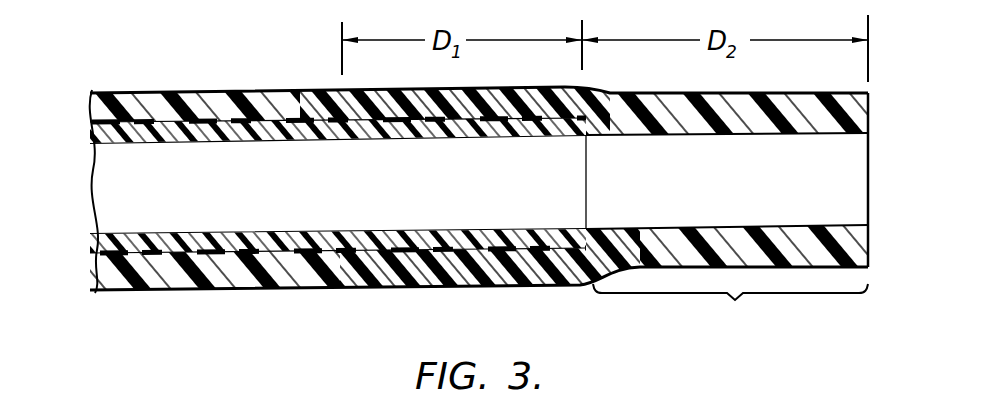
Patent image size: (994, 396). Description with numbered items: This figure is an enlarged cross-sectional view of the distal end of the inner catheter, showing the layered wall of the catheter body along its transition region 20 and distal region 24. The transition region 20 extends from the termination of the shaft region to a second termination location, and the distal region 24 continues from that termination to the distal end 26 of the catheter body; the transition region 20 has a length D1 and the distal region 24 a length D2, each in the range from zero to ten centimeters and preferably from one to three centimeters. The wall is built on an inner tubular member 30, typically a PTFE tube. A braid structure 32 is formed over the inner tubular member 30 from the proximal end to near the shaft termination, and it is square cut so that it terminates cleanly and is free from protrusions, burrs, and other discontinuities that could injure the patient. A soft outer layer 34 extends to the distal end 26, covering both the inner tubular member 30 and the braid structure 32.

The transition region 20 is at (586, 284).
The distal region 24 is at (730, 309).
The distal end 26 is at (870, 111).
The inner tubular member 30 is at (120, 246).
The braid structure 32 is at (128, 120).
The soft outer layer 34 is at (258, 92).